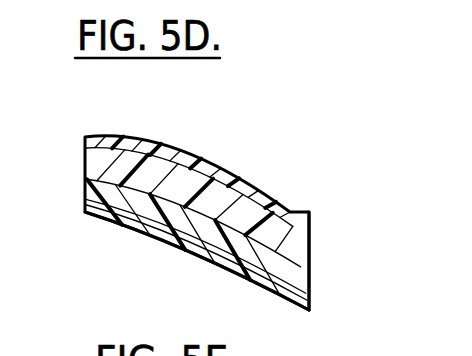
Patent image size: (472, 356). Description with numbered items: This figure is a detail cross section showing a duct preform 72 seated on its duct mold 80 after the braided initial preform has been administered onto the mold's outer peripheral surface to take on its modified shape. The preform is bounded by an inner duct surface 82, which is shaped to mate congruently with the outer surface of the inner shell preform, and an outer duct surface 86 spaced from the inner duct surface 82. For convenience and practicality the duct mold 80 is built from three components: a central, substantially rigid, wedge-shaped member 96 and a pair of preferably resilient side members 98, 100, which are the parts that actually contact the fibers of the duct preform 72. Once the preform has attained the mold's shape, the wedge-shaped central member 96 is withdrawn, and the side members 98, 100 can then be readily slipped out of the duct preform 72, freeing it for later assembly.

The duct preform 72 is at (268, 177).
The duct mold 80 is at (310, 268).
The inner duct surface 82 is at (110, 222).
The outer duct surface 86 is at (113, 138).
The central rigid member 96 is at (180, 230).
The side member 98 is at (183, 185).
The side member 100 is at (227, 273).